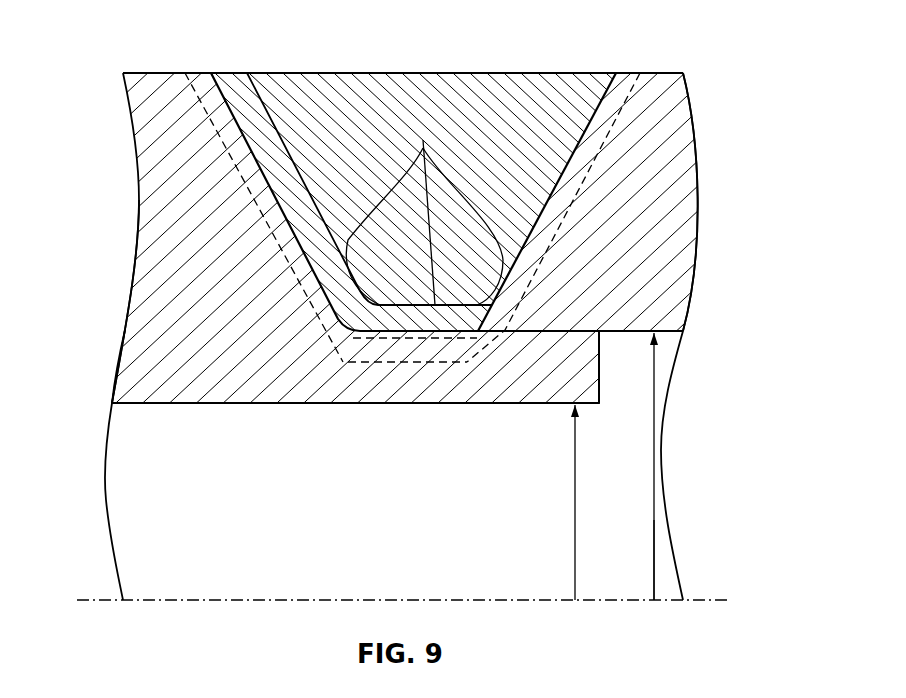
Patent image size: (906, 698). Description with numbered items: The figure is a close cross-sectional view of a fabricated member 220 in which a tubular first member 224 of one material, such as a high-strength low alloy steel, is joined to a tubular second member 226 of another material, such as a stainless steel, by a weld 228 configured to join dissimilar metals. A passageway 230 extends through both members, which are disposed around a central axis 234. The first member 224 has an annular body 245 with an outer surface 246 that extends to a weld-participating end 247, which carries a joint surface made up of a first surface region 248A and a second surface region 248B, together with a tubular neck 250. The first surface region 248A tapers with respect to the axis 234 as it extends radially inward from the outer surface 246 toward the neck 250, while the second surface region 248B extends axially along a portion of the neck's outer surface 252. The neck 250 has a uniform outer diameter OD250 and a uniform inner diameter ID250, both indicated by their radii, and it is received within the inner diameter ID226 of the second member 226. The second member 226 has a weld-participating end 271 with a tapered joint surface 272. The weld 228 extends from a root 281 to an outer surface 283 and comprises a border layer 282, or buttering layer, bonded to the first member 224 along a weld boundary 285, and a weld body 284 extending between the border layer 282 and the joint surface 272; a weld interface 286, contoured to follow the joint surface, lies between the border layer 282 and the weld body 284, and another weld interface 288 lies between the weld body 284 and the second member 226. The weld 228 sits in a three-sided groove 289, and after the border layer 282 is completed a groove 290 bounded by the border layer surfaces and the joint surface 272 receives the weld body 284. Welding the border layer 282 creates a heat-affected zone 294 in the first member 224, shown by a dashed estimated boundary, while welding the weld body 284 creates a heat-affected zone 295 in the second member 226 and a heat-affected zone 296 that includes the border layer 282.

The fabricated member 220 is at (128, 103).
The tubular first member 224 is at (138, 207).
The tubular second member 226 is at (693, 142).
The weld 228 is at (365, 85).
The passageway 230 is at (143, 497).
The central axis 234 is at (100, 600).
The annular body 245 is at (130, 330).
The outer surface 246 is at (143, 73).
The weld-participating end 247 is at (280, 393).
The first surface region 248A is at (215, 80).
The second surface region 248B is at (420, 331).
The neck 250 is at (512, 398).
The outer surface of neck 252 is at (617, 330).
The weld-participating end 271 is at (628, 73).
The tapered joint surface 272 is at (590, 105).
The root 281 is at (450, 320).
The border layer 282 is at (240, 127).
The outer surface 283 is at (517, 72).
The weld body 284 is at (473, 93).
The weld boundary 285 is at (278, 212).
The weld interface 286 is at (260, 113).
The weld interface 288 is at (577, 150).
The groove 289 is at (520, 247).
The groove 290 is at (424, 209).
The heat-affected zone 294 is at (380, 363).
The heat-affected zone 295 is at (555, 242).
The heat-affected zone 296 is at (470, 337).
The outer diameter of neck OD250 is at (655, 427).
The inner diameter of neck ID250 is at (573, 532).
The inner diameter of second member ID226 is at (655, 525).